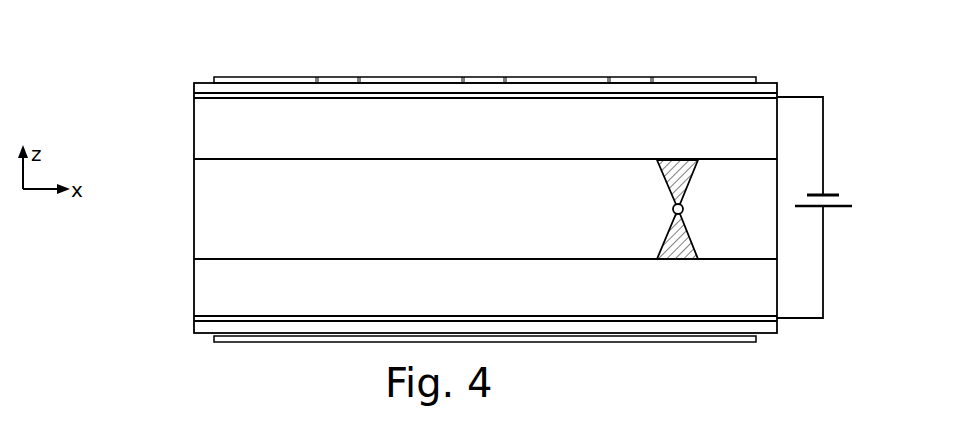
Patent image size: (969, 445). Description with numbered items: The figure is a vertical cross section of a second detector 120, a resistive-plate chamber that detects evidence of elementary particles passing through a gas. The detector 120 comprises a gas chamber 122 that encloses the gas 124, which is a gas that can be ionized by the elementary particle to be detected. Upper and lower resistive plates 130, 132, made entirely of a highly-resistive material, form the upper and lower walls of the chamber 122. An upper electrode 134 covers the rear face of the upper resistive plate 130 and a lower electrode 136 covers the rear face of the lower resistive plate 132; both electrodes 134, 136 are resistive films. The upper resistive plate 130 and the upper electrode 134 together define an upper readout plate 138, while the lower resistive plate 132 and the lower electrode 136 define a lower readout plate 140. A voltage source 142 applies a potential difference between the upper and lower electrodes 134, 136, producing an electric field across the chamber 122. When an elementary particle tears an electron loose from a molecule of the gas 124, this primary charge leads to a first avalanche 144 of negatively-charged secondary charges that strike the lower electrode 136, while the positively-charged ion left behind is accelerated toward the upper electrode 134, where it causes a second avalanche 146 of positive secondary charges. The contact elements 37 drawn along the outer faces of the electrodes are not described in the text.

The electrode contact 37 is at (684, 77).
The second detector 120 is at (108, 73).
The gas chamber 122 is at (189, 159).
The gas 124 is at (485, 228).
The upper resistive plate 130 is at (204, 130).
The lower resistive plate 132 is at (204, 288).
The upper electrode 134 is at (193, 88).
The lower electrode 136 is at (193, 327).
The upper readout plate 138 is at (824, 78).
The lower readout plate 140 is at (824, 258).
The voltage source 142 is at (850, 200).
The first avalanche 144 is at (676, 238).
The second avalanche 146 is at (676, 181).